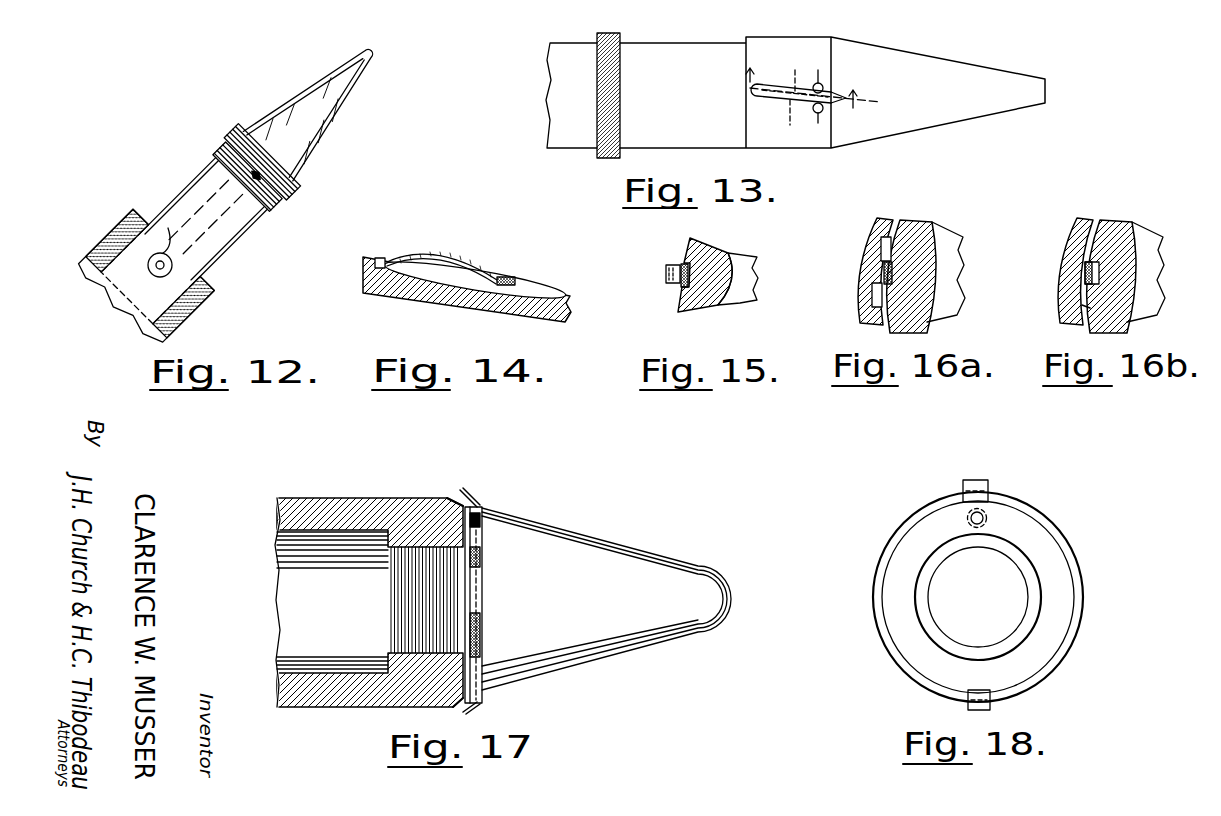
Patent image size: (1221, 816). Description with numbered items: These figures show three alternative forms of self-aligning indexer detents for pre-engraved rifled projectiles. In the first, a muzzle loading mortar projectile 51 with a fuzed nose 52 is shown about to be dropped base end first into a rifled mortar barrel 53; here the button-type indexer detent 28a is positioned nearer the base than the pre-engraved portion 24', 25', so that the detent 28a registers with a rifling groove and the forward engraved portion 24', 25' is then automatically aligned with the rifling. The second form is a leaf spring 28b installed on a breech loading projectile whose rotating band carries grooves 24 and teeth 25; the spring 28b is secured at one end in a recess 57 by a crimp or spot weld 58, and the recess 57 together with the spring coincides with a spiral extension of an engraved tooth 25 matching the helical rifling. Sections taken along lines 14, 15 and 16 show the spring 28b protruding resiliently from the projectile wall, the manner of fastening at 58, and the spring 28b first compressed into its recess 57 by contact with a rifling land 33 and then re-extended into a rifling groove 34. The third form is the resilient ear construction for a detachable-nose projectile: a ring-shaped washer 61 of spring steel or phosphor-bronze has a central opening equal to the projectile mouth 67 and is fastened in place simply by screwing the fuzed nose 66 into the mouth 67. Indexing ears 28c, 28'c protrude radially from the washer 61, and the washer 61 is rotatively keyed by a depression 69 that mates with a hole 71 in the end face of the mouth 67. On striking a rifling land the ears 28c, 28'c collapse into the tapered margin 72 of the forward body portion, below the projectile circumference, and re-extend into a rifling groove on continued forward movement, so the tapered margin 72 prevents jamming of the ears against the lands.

In FIG. 13, the section line 14— 14 is at (808, 81).
In FIG. 13, the section line 15— 15 is at (817, 121).
In FIG. 13, the section line 16— 16 is at (788, 111).
In FIG. 13, the grooves 24 is at (587, 95).
In FIG. 13, the band teeth 25 is at (651, 95).
In FIG. 12, the pre-engraved portion groove 24' is at (248, 176).
In FIG. 12, the pre-engraved portion tooth 25' is at (266, 162).
In FIG. 12, the indexer detent 28a is at (168, 228).
In FIG. 13, the leaf spring 28b is at (778, 100).
In FIG. 14, the leaf spring 28b is at (460, 256).
In FIG. 15, the leaf spring 28b is at (668, 283).
In FIG. 16A, the leaf spring 28b is at (884, 275).
In FIG. 16B, the leaf spring 28b is at (1085, 275).
In FIG. 17, the indexing ear 28c is at (472, 707).
In FIG. 18, the indexing ear 28c is at (990, 706).
In FIG. 17, the indexing ear 28'c is at (495, 489).
In FIG. 18, the indexing ear 28'c is at (1001, 484).
In FIG. 16A, the lands 33 is at (878, 262).
In FIG. 16B, the lands 33 is at (1082, 300).
In FIG. 16A, the grooves 34 is at (872, 300).
In FIG. 16B, the grooves 34 is at (1084, 268).
In FIG. 12, the projectile 51 is at (222, 247).
In FIG. 12, the fuzed nose 52 is at (384, 47).
In FIG. 12, the rifled mortar barrel 53 is at (128, 214).
In FIG. 13, the recess 57 is at (753, 92).
In FIG. 14, the recess 57 is at (383, 262).
In FIG. 16A, the recess 57 is at (918, 262).
In FIG. 16B, the recess 57 is at (1112, 262).
In FIG. 13, the crimp or spot weld 58 is at (823, 113).
In FIG. 14, the crimp or spot weld 58 is at (517, 277).
In FIG. 15, the crimp or spot weld 58 is at (679, 286).
In FIG. 17, the washer 61 is at (482, 668).
In FIG. 18, the washer 61 is at (1050, 548).
In FIG. 17, the fuzed nose 66 is at (692, 572).
In FIG. 17, the projectile mouth 67 is at (440, 660).
In FIG. 18, the projectile mouth 67 is at (985, 645).
In FIG. 17, the depression 69 is at (480, 522).
In FIG. 18, the depression 69 is at (968, 520).
In FIG. 17, the hole 71 is at (462, 502).
In FIG. 17, the tapered margin 72 is at (458, 707).